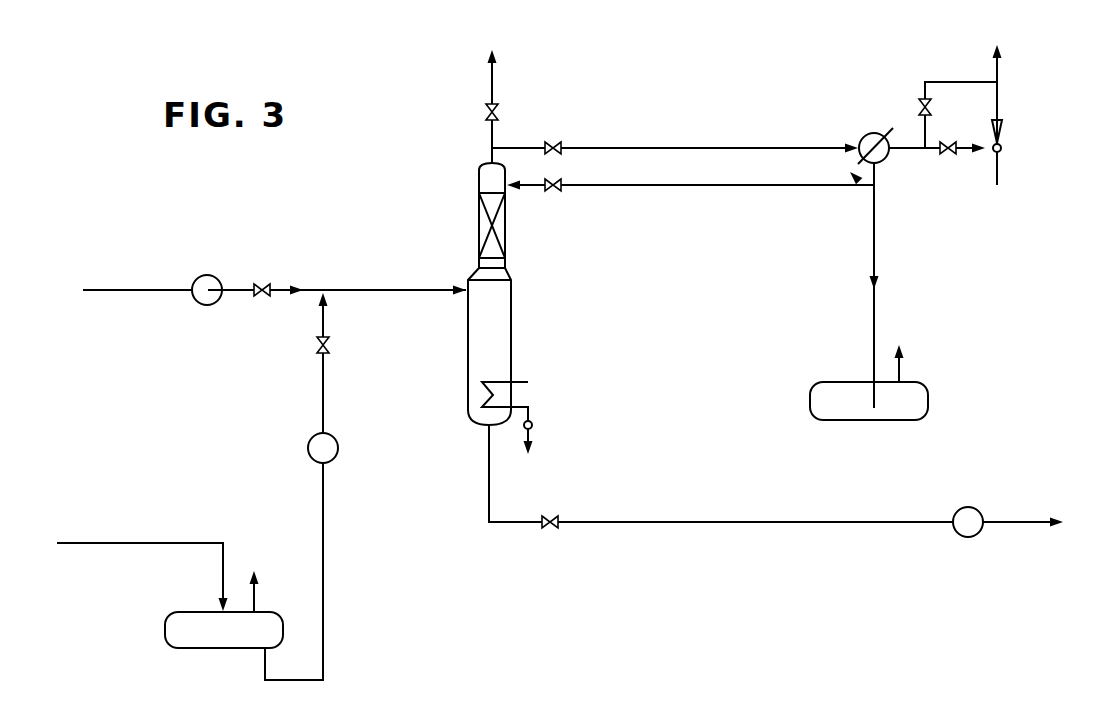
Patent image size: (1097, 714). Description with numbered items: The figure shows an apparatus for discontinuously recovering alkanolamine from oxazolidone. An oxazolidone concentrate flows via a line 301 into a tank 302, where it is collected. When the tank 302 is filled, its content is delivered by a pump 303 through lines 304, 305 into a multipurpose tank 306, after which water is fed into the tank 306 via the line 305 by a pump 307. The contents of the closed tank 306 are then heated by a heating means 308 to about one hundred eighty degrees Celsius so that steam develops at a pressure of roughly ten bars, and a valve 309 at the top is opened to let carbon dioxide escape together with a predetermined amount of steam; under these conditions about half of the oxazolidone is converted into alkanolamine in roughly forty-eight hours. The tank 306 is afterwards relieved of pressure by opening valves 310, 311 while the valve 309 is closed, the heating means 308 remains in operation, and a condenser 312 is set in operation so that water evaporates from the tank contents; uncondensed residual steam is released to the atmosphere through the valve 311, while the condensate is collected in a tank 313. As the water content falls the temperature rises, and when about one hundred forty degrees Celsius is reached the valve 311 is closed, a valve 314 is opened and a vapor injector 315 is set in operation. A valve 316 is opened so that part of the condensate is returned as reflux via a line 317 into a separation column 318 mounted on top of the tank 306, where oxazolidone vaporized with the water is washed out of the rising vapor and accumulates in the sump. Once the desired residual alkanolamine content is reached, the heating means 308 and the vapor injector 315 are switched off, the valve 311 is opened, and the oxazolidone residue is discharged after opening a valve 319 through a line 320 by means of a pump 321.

The line 301 is at (178, 543).
The tank 302 is at (150, 613).
The pump 303 is at (338, 441).
The line 304 is at (321, 390).
The line 305 is at (403, 288).
The multipurpose tank 306 is at (530, 322).
The pump 307 is at (200, 277).
The heating means 308 is at (525, 384).
The valve 309 is at (486, 114).
The valve 310 is at (551, 141).
The valve 311 is at (919, 110).
The condenser 312 is at (852, 126).
The tank 313 is at (945, 387).
The valve 314 is at (953, 160).
The vapor injector 315 is at (1003, 146).
The valve 316 is at (551, 191).
The line 317 is at (697, 187).
The separation column 318 is at (507, 245).
The valve 319 is at (552, 515).
The line 320 is at (673, 522).
The pump 321 is at (957, 509).